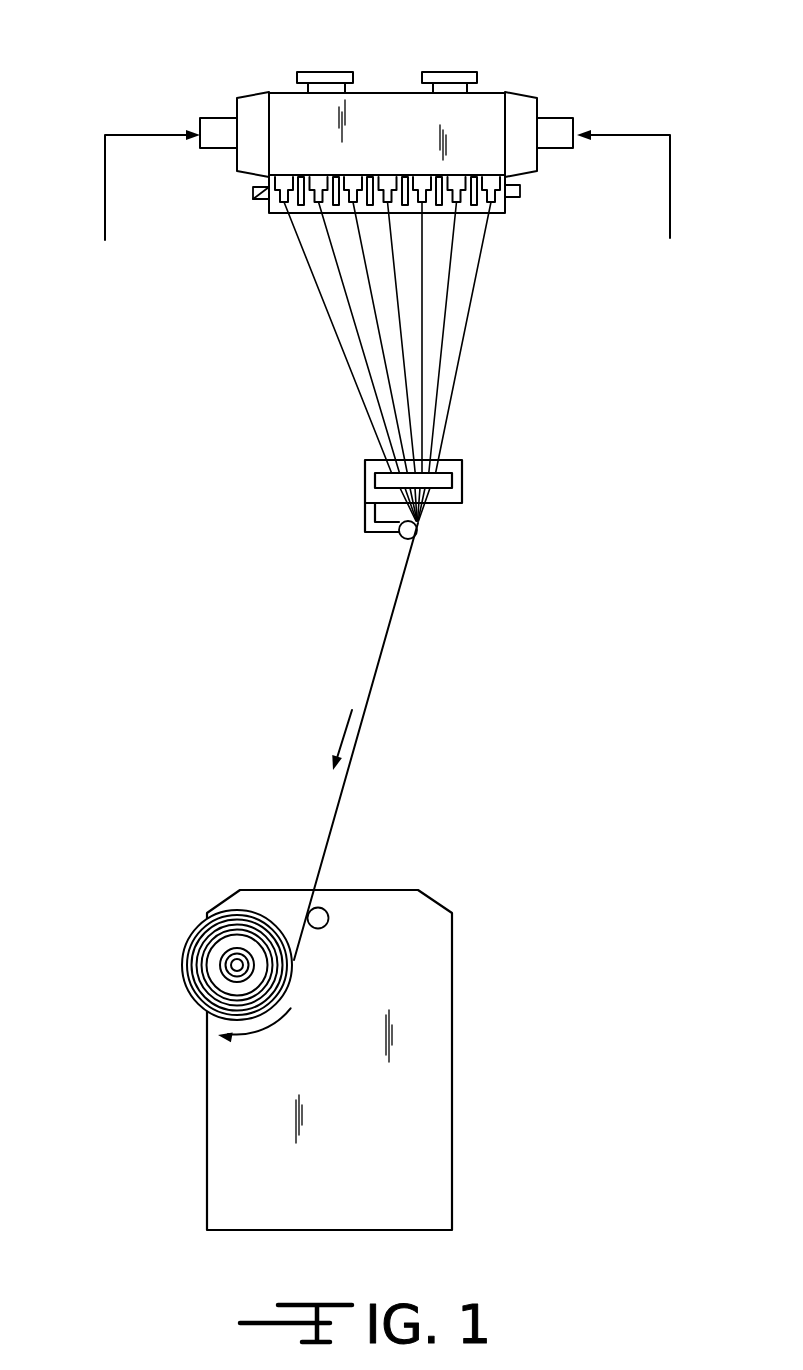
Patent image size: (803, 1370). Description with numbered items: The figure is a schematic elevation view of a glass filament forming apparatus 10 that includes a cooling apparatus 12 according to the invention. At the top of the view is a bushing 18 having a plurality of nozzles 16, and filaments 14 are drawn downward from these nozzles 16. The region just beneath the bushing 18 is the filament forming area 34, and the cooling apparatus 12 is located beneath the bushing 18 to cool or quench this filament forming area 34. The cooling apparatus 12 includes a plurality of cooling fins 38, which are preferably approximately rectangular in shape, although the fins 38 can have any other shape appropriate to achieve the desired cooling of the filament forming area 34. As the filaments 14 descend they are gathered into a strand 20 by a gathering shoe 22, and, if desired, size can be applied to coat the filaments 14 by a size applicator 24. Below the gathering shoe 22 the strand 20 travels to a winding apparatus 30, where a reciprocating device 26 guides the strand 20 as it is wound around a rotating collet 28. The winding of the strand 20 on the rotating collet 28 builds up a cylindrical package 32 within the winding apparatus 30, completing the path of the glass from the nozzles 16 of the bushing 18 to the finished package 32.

The glass filament forming apparatus 10 is at (147, 77).
The cooling apparatus 12 is at (514, 211).
The filaments 14 is at (352, 317).
The nozzles 16 is at (258, 197).
The bushing 18 is at (473, 115).
The strand 20 is at (380, 665).
The gathering shoe 22 is at (417, 531).
The size applicator 24 is at (365, 461).
The reciprocating device 26 is at (328, 920).
The rotating collet 28 is at (236, 969).
The winding apparatus 30 is at (395, 898).
The cylindrical package 32 is at (184, 948).
The filament forming area 34 is at (78, 175).
The cooling fins 38 is at (440, 215).